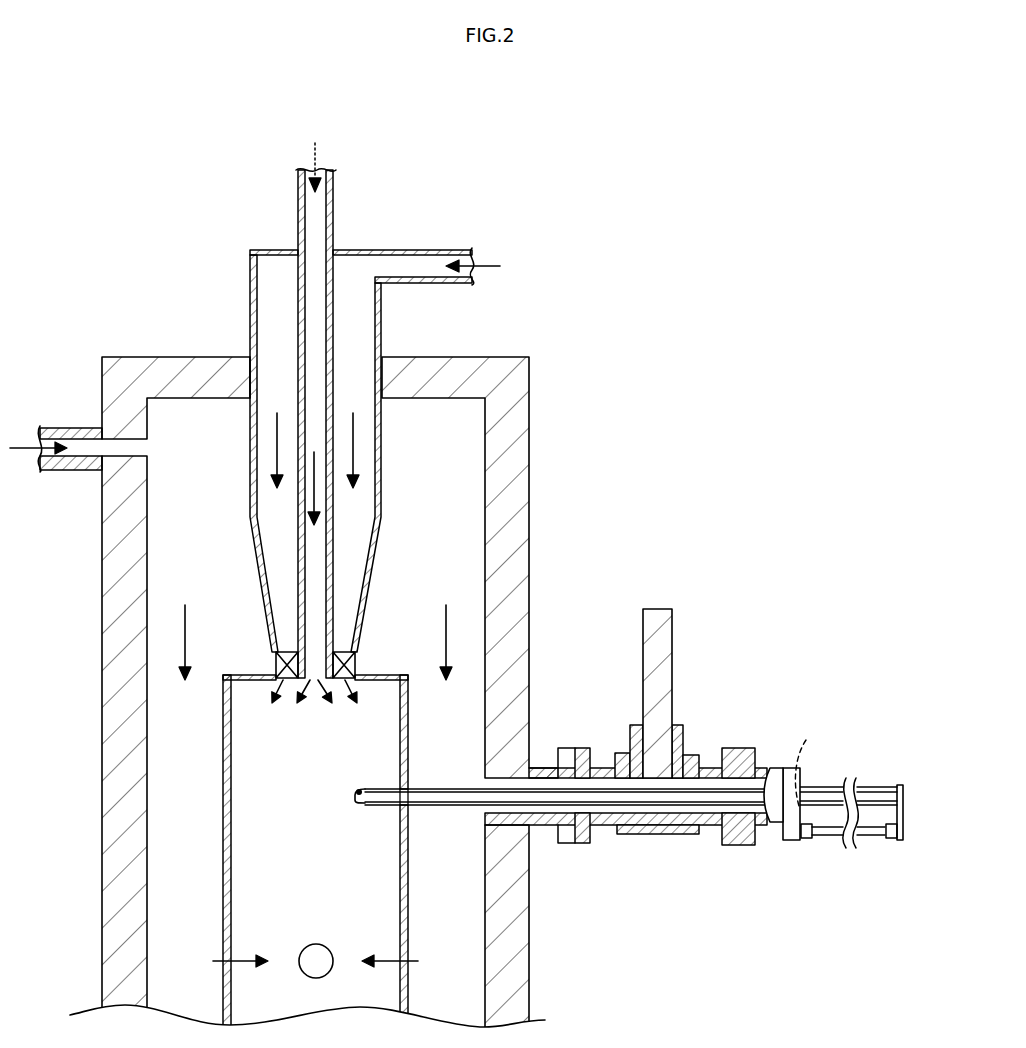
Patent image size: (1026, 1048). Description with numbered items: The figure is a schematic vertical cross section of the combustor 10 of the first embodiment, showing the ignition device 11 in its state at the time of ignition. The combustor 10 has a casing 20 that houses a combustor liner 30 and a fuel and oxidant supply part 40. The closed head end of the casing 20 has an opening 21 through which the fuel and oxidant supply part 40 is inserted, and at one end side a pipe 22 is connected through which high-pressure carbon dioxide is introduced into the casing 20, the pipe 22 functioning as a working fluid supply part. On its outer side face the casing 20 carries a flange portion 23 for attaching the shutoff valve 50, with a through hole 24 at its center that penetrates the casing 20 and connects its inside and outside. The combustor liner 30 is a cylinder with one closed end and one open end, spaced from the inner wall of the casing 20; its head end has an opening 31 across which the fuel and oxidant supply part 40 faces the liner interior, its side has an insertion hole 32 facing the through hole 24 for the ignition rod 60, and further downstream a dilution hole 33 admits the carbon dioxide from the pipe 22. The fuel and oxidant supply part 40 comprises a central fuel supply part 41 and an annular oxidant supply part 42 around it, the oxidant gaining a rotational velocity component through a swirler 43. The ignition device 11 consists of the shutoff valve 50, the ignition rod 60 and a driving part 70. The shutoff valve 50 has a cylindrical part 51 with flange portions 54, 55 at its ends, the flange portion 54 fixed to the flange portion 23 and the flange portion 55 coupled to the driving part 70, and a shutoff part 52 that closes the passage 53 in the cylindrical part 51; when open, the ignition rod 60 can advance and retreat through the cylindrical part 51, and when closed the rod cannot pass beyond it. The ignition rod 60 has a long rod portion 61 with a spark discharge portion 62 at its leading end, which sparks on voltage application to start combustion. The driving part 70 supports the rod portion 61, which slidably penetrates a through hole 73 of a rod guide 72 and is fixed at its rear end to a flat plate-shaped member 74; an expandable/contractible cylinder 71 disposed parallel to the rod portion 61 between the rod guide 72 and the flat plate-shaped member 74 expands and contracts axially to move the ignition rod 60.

The combustor 10 is at (467, 586).
The ignition device 11 is at (622, 800).
The casing 20 is at (505, 558).
The opening 21 is at (253, 374).
The pipe 22 is at (66, 432).
The flange portion 23 is at (563, 760).
The through hole 24 is at (500, 810).
The combustor liner 30 is at (336, 852).
The opening 31 is at (348, 665).
The insertion hole 32 is at (406, 808).
The dilution hole 33 is at (317, 955).
The fuel and oxidant supply part 40 is at (336, 410).
The fuel supply part 41 is at (315, 550).
The oxidant supply part 42 is at (282, 582).
The swirler 43 is at (282, 665).
The shutoff valve 50 is at (667, 772).
The cylindrical part 51 is at (620, 834).
The shutoff part 52 is at (663, 657).
The passage 53 is at (700, 786).
The flange portion 54 is at (583, 840).
The flange portion 55 is at (730, 840).
The ignition rod 60 is at (608, 795).
The rod portion 61 is at (392, 796).
The spark discharge portion 62 is at (346, 816).
The driving part 70 is at (844, 825).
The expandable/contractible cylinder 71 is at (838, 838).
The rod guide 72 is at (792, 842).
The through hole 73 is at (797, 778).
The flat plate-shaped member 74 is at (900, 842).